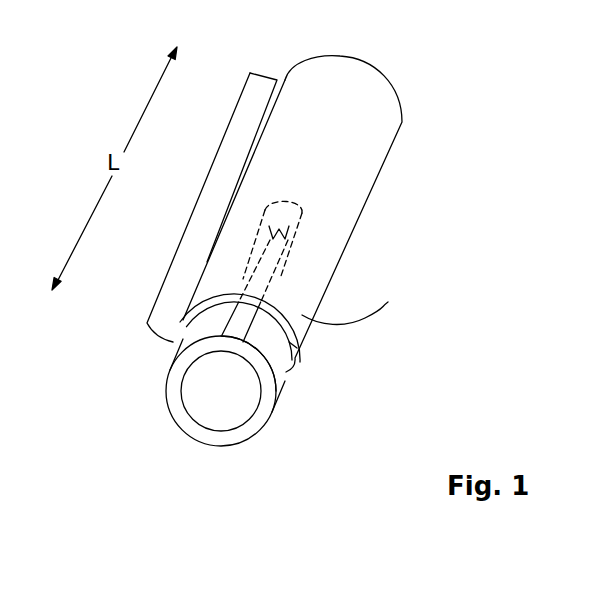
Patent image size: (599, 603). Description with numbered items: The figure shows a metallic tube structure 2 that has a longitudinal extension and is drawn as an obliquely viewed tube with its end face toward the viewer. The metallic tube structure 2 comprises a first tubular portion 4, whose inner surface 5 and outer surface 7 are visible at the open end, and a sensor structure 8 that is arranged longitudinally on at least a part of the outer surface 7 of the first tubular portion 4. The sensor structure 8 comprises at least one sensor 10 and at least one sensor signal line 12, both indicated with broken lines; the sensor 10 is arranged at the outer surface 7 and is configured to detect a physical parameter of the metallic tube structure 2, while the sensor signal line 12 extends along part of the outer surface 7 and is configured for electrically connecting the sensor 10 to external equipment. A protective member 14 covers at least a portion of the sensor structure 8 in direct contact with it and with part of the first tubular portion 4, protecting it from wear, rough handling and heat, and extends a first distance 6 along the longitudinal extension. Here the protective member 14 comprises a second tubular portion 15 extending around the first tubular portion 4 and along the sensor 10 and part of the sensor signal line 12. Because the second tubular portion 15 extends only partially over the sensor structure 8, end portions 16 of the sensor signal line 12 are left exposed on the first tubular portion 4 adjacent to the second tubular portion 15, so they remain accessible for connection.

The metallic tube structure 2 is at (445, 77).
The first tubular portion 4 is at (220, 433).
The inner surface 5 is at (199, 406).
The first distance 6 is at (199, 201).
The outer surface 7 is at (278, 359).
The sensor structure 8 is at (292, 274).
The sensor 10 is at (278, 226).
The sensor signal line 12 is at (243, 272).
The protective member 14 is at (293, 345).
The second tubular portion 15 is at (345, 177).
The end portion 16 is at (235, 295).